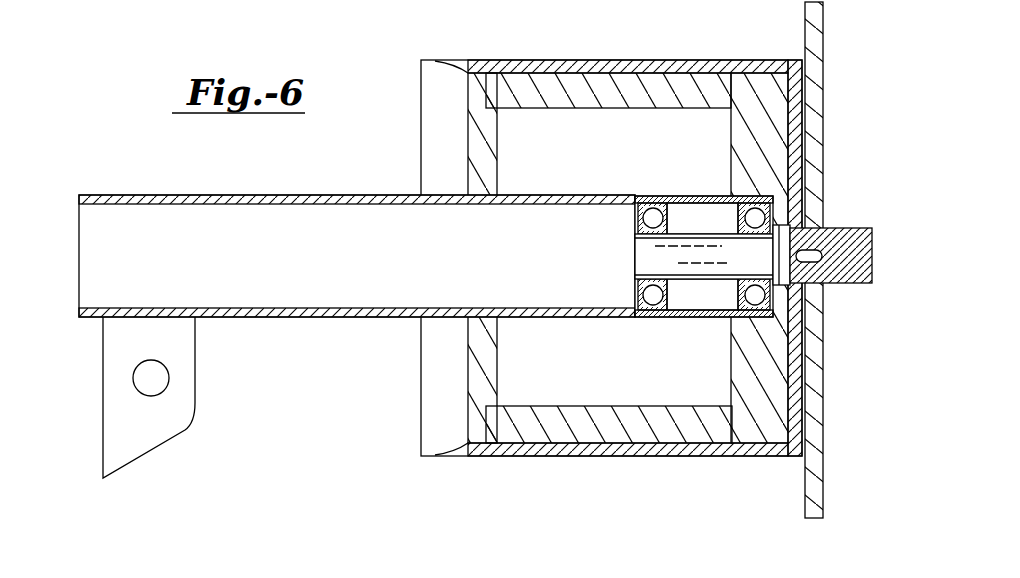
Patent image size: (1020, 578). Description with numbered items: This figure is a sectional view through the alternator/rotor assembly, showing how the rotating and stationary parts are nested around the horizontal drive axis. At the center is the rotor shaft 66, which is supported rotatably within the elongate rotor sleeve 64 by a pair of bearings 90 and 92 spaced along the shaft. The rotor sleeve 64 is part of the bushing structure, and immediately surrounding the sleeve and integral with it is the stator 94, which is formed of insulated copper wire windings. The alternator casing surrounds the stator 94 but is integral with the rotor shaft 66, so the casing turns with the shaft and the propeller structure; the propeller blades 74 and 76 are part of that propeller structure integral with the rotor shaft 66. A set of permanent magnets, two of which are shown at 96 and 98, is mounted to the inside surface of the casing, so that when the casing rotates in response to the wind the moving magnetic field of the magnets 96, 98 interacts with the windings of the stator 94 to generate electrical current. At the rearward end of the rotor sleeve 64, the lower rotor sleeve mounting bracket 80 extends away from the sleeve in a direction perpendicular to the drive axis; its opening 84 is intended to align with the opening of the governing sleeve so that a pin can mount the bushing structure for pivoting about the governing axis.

The rotor sleeve 64 is at (218, 195).
The rotor shaft 66 is at (694, 226).
The propeller blade 74 is at (823, 85).
The propeller blade 76 is at (825, 472).
The lower rotor sleeve mounting bracket 80 is at (150, 452).
The opening 84 is at (133, 378).
The bearing 90 is at (636, 297).
The bearing 92 is at (738, 295).
The stator 94 is at (583, 178).
The permanent magnet 96 is at (636, 108).
The permanent magnet 98 is at (627, 407).